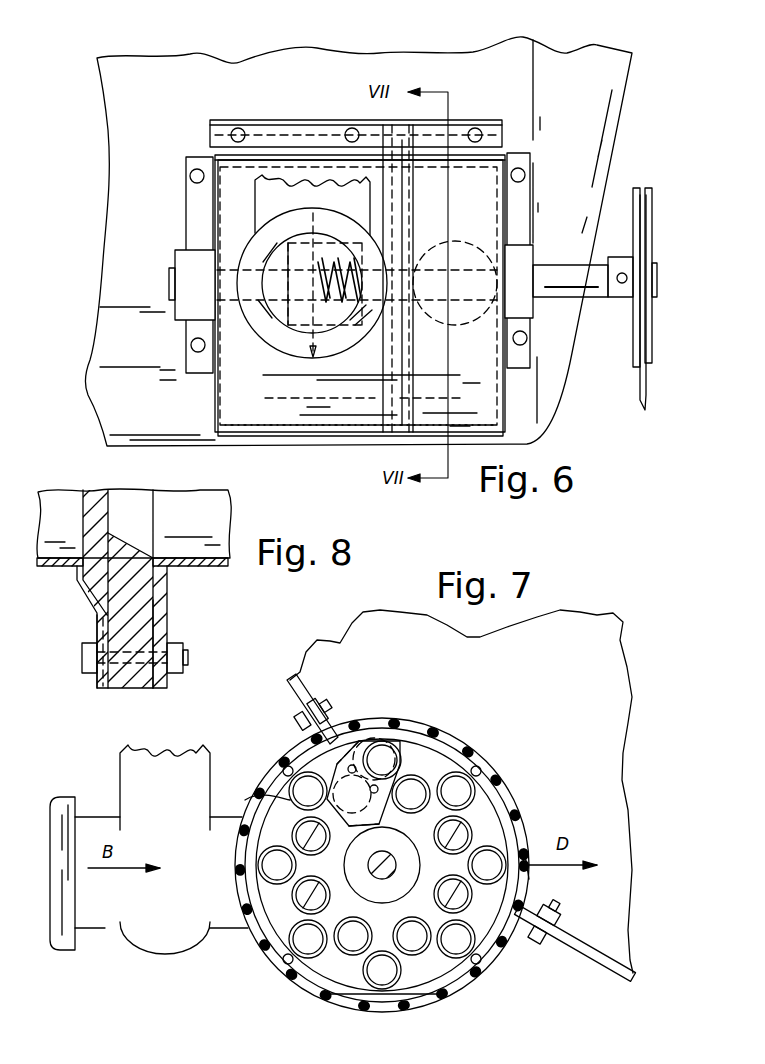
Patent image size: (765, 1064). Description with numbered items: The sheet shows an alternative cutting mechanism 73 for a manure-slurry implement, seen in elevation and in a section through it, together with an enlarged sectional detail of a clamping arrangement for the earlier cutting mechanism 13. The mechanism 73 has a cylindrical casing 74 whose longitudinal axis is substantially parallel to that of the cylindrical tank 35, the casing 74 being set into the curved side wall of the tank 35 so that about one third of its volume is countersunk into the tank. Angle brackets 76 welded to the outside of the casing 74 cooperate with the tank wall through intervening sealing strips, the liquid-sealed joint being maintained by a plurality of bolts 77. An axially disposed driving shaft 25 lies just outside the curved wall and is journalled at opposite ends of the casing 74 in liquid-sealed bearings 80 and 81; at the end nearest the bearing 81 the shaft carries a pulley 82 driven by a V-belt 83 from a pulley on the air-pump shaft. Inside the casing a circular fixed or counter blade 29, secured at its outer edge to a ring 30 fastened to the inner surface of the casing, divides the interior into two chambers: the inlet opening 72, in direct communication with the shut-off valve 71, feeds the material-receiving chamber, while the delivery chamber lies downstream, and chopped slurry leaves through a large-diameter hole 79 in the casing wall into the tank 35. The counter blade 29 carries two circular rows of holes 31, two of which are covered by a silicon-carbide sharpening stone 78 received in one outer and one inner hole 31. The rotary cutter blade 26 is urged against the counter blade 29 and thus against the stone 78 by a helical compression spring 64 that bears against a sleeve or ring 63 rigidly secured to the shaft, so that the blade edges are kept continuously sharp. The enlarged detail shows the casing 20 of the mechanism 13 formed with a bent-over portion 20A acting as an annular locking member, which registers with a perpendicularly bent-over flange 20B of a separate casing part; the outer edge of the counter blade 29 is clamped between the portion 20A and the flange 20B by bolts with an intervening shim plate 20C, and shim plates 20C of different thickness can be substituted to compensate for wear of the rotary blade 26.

In FIG. 8, the cutting mechanism 13 is at (242, 505).
In FIG. 8, the casing 20 is at (60, 568).
In FIG. 8, the bent-over portion 20A is at (92, 680).
In FIG. 8, the bent-over flange 20B is at (168, 626).
In FIG. 8, the shim plate 20C is at (100, 690).
In FIG. 6, the shaft 25 is at (572, 275).
In FIG. 7, the shaft 25 is at (370, 866).
In FIG. 6, the cutter blade 26 is at (392, 398).
In FIG. 8, the cutter blade 26 is at (92, 490).
In FIG. 7, the cutter blade 26 is at (312, 985).
In FIG. 6, the fixed or counter blade 29 is at (405, 370).
In FIG. 8, the fixed or counter blade 29 is at (148, 682).
In FIG. 7, the fixed or counter blade 29 is at (486, 826).
In FIG. 6, the ring 30 is at (410, 208).
In FIG. 7, the ring 30 is at (498, 778).
In FIG. 8, the holes 31 is at (140, 495).
In FIG. 7, the holes 31 is at (245, 800).
In FIG. 6, the tank 35 is at (333, 62).
In FIG. 7, the tank 35 is at (340, 640).
In FIG. 6, the sleeve or ring 63 is at (290, 312).
In FIG. 7, the sleeve or ring 63 is at (405, 845).
In FIG. 6, the helical compression spring 64 is at (344, 234).
In FIG. 6, the shut-off valve 71 is at (268, 194).
In FIG. 7, the shut-off valve 71 is at (120, 753).
In FIG. 6, the inlet opening 72 is at (303, 325).
In FIG. 7, the inlet opening 72 is at (103, 930).
In FIG. 6, the cutting mechanism 73 is at (205, 411).
In FIG. 7, the cutting mechanism 73 is at (498, 728).
In FIG. 6, the cylindrical casing 74 is at (282, 437).
In FIG. 7, the cylindrical casing 74 is at (262, 952).
In FIG. 6, the angle brackets 76 is at (290, 128).
In FIG. 7, the angle brackets 76 is at (292, 714).
In FIG. 6, the bolts 77 is at (478, 128).
In FIG. 7, the bolts 77 is at (300, 733).
In FIG. 7, the sharpening stone 78 is at (388, 757).
In FIG. 6, the hole 79 is at (461, 240).
In FIG. 7, the hole 79 is at (529, 883).
In FIG. 6, the bearing 80 is at (182, 250).
In FIG. 6, the bearing 81 is at (524, 305).
In FIG. 6, the pulley 82 is at (647, 190).
In FIG. 6, the V-belt 83 is at (644, 410).